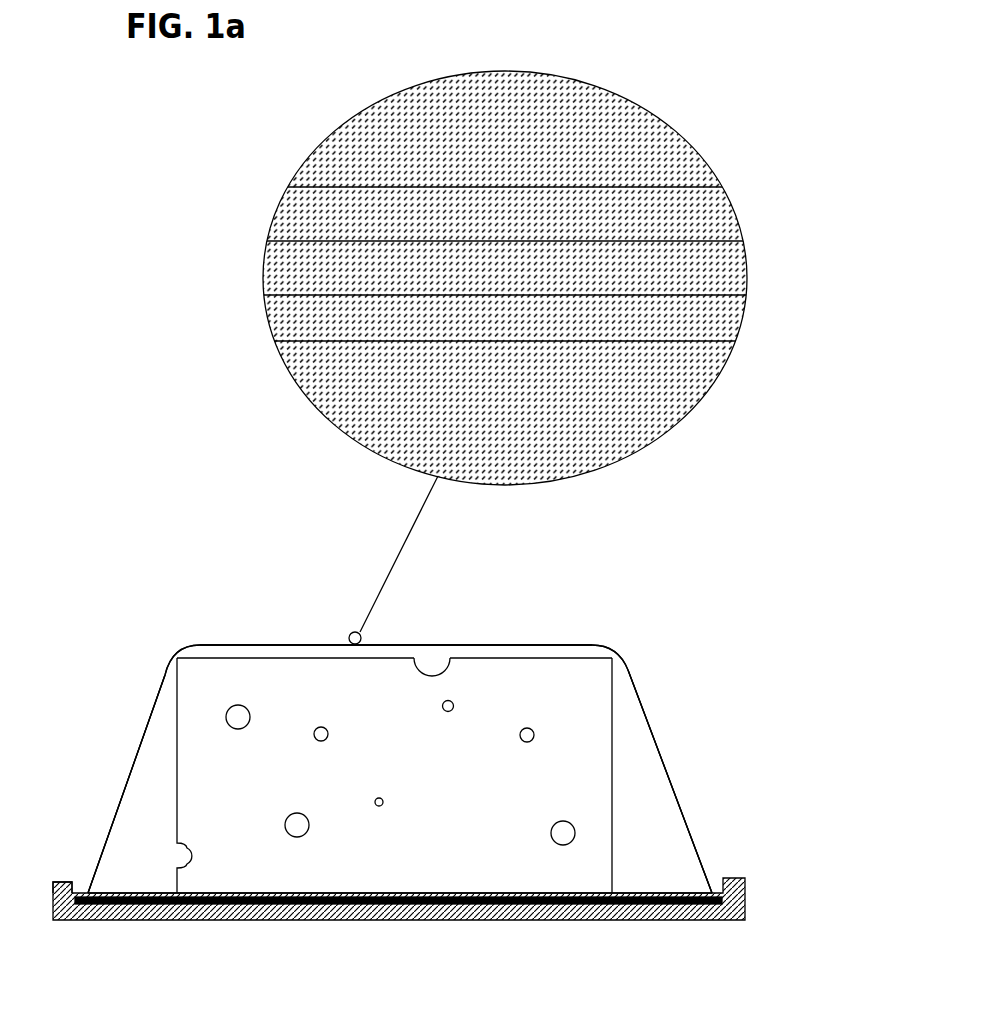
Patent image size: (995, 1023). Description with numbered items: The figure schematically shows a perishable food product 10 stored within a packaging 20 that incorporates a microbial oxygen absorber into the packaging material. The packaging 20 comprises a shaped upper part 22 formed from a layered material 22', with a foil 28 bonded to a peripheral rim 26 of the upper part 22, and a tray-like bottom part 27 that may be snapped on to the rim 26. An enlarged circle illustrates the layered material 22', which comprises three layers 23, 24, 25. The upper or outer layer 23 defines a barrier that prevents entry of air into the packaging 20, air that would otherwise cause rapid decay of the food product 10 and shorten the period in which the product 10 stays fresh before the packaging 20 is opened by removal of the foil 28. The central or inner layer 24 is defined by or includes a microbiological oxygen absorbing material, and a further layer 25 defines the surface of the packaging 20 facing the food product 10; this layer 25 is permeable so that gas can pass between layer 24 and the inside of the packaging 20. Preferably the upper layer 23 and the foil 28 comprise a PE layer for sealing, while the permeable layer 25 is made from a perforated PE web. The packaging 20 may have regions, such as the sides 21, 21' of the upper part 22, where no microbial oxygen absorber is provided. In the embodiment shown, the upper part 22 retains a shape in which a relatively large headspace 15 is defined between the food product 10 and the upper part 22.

The perishable food product 10 is at (216, 763).
The headspace 15 is at (139, 804).
The packaging 20 is at (178, 644).
The sides of the upper part 21 is at (396, 602).
The lid side walls 21' is at (420, 754).
The shaped upper part 22 is at (394, 609).
The layered material 22' is at (542, 351).
The upper layer 23 is at (313, 215).
The central layer 24 is at (277, 268).
The permeable layer 25 is at (290, 322).
The peripheral rim 26 is at (83, 883).
The tray-like bottom part 27 is at (193, 921).
The foil 28 is at (316, 893).